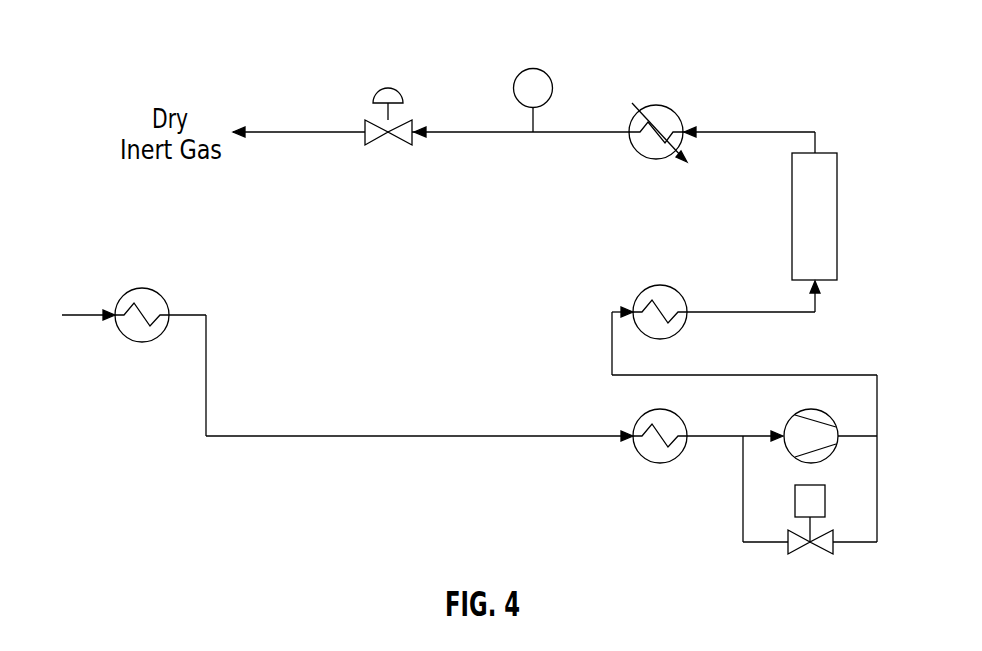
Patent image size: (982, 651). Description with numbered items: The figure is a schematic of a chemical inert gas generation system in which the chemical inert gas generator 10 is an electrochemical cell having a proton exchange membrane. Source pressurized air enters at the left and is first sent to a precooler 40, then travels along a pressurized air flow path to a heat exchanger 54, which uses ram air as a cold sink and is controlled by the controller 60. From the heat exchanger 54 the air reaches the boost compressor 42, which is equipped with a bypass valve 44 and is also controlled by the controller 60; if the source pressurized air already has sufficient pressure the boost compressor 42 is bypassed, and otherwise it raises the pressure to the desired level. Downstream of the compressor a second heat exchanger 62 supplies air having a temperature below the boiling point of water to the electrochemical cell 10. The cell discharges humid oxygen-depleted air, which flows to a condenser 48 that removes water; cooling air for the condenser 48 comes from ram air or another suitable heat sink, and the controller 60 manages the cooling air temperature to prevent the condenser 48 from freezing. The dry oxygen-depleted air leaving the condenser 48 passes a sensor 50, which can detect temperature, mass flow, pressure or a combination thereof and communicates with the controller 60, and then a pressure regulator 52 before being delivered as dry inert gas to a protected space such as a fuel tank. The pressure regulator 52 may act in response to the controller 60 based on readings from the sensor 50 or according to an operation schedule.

The chemical inert gas generator 10 is at (792, 217).
The precooler 40 is at (157, 292).
The boost compressor 42 is at (813, 409).
The bypass valve 44 is at (815, 549).
The condenser 48 is at (669, 108).
The sensor 50 is at (546, 72).
The pressure regulator 52 is at (394, 92).
The heat exchanger 54 is at (675, 412).
The controller 60 is at (779, 56).
The second heat exchanger 62 is at (673, 291).